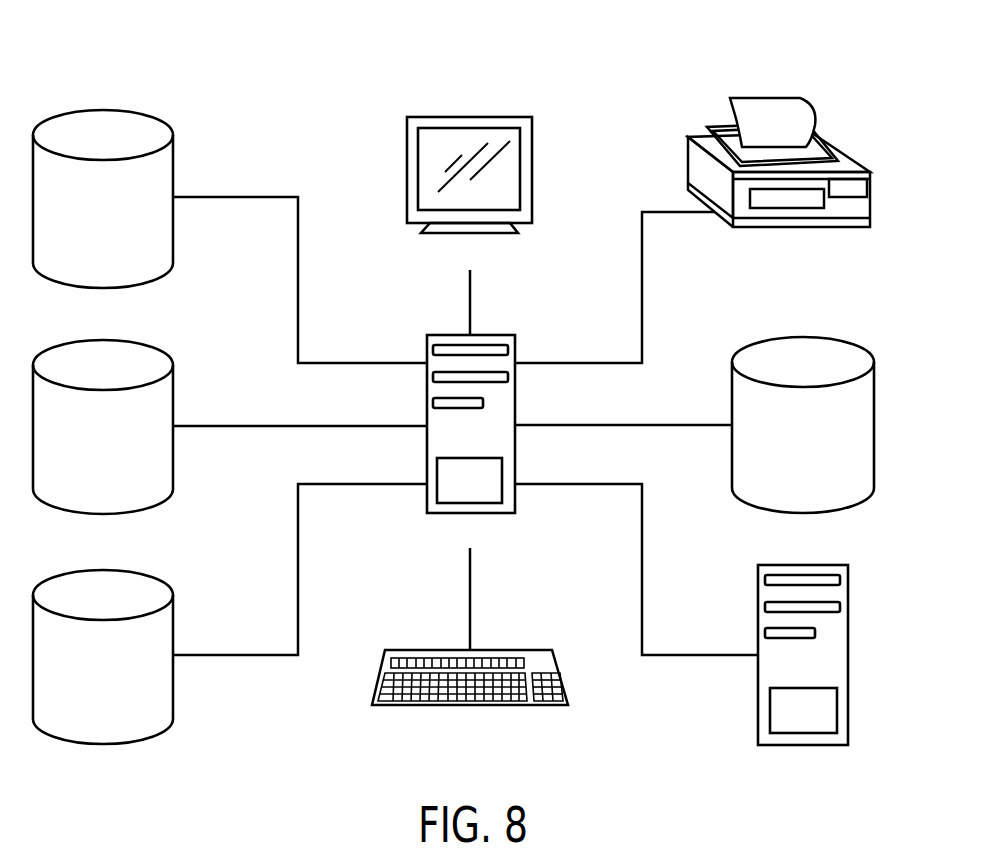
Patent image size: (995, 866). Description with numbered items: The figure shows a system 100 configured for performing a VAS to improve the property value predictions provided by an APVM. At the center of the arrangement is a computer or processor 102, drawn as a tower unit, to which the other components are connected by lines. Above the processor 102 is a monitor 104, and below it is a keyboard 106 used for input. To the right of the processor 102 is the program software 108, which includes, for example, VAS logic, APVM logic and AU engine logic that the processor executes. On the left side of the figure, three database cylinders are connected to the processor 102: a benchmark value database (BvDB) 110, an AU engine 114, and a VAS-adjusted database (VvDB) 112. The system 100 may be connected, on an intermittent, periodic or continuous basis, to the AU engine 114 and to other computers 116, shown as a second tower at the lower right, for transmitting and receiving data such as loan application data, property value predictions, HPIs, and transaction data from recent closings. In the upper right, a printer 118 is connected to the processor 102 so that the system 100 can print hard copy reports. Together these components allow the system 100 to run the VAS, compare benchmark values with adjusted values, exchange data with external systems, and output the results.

The system 100 is at (321, 54).
The computer 102 is at (488, 335).
The monitor 104 is at (470, 116).
The keyboard 106 is at (513, 650).
The program software 108 is at (804, 337).
The benchmark value database (BvDB) 110 is at (106, 110).
The VAS-adjusted database (VvDB) 112 is at (106, 570).
The AU engine 114 is at (106, 340).
The other computers 116 is at (804, 564).
The printer 118 is at (842, 146).